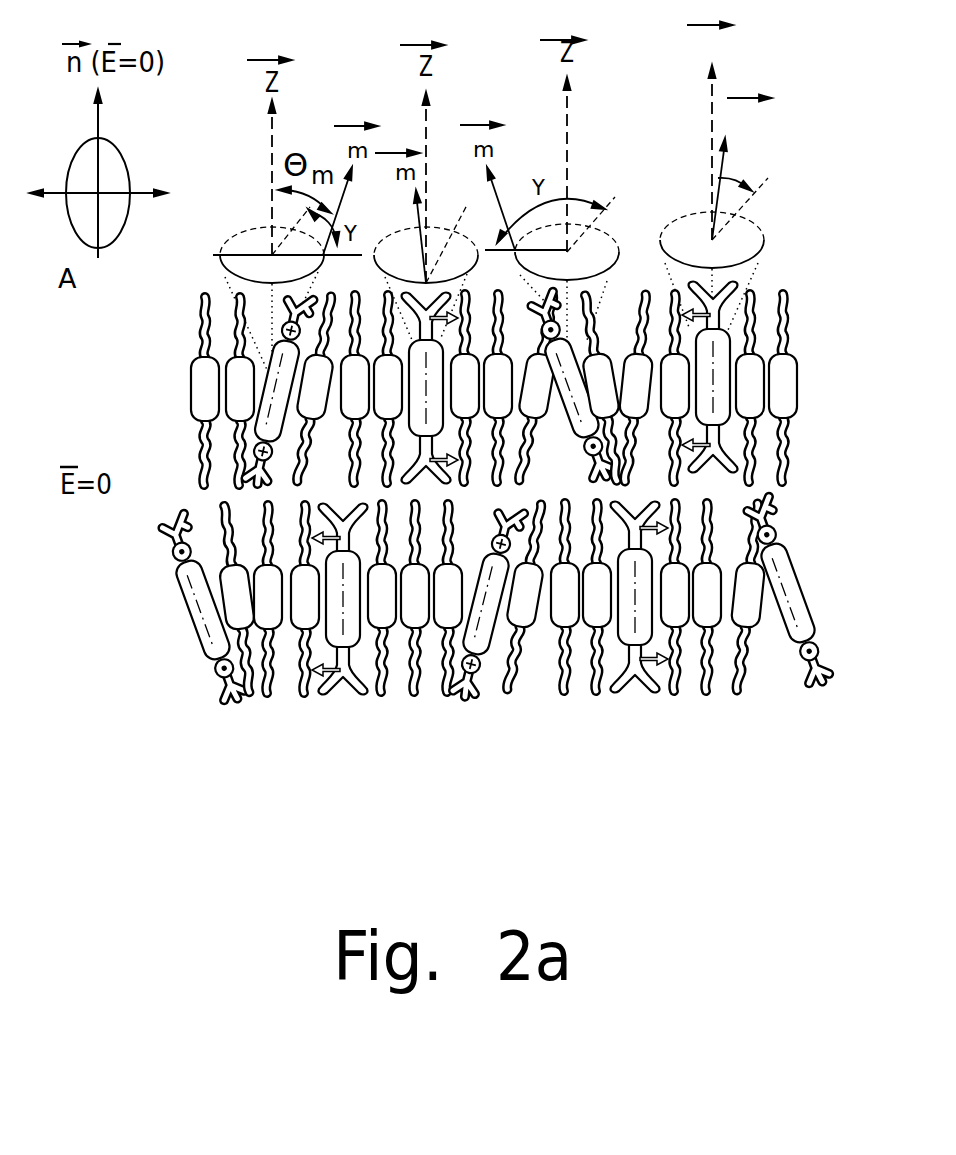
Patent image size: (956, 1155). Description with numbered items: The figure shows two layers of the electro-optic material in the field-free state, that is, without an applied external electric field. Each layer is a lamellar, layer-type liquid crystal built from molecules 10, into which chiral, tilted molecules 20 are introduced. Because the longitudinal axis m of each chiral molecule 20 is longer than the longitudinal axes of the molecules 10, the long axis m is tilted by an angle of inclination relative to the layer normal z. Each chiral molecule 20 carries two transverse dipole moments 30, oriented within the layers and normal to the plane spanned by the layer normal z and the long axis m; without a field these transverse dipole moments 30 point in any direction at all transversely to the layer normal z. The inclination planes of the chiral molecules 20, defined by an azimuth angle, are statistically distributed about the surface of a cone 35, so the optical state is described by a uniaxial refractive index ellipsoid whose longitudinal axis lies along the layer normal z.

The molecules 10 is at (800, 372).
The chiral tilted molecules 20 is at (805, 603).
The transverse dipole moments 30 is at (780, 532).
The cone 35 is at (765, 236).